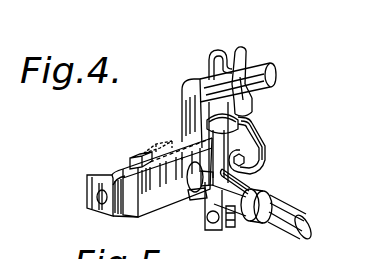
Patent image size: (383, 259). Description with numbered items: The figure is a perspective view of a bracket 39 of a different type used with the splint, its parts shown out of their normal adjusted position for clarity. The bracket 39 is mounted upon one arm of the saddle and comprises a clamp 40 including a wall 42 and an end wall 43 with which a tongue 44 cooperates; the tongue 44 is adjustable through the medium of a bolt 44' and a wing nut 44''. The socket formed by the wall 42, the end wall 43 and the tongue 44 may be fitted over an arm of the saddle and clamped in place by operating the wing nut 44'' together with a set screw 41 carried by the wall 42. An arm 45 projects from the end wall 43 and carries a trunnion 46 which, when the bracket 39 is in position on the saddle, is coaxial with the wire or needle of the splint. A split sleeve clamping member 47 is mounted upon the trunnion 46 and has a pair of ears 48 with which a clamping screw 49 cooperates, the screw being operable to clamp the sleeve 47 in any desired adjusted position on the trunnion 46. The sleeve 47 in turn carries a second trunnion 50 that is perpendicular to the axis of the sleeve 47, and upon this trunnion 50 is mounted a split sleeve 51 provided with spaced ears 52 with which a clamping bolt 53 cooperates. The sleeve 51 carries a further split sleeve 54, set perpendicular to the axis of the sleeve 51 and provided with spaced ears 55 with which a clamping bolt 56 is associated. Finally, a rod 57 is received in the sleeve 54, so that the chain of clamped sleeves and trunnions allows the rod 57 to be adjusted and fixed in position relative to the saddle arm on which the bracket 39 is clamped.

The bracket 39 is at (116, 168).
The clamp 40 is at (137, 216).
The set screw 41 is at (99, 209).
The wall 42 is at (90, 193).
The end wall 43 is at (148, 150).
The tongue 44 is at (129, 151).
The bolt 44' is at (190, 199).
The wing nut 44'' is at (173, 213).
The arm 45 is at (184, 96).
The trunnion 46 is at (274, 70).
The split sleeve clamping member 47 is at (262, 90).
The ears 48 is at (224, 52).
The clamping screw 49 is at (246, 53).
The trunnion 50 is at (239, 114).
The split sleeve 51 is at (212, 128).
The spaced ears 52 is at (265, 160).
The clamping bolt 53 is at (258, 138).
The split sleeve 54 is at (262, 184).
The spaced ears 55 is at (240, 228).
The clamping bolt 56 is at (206, 228).
The rod 57 is at (302, 210).